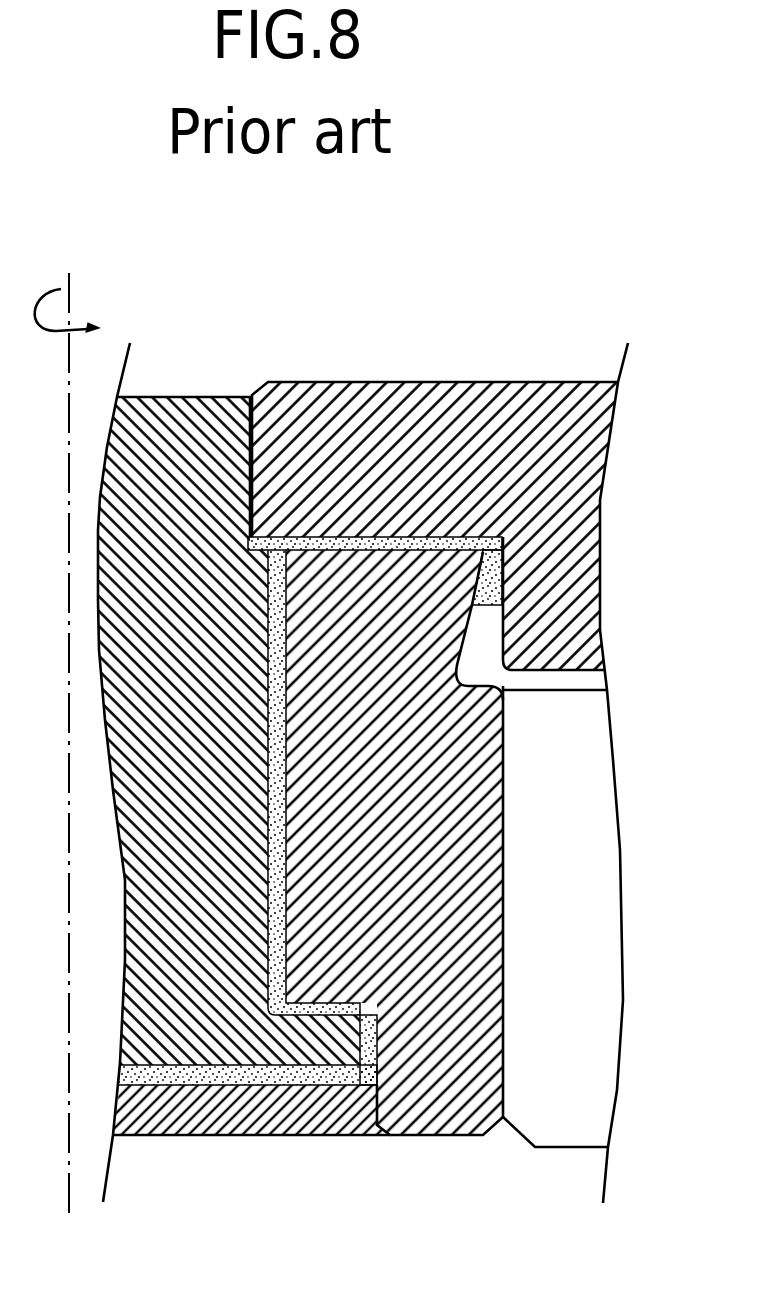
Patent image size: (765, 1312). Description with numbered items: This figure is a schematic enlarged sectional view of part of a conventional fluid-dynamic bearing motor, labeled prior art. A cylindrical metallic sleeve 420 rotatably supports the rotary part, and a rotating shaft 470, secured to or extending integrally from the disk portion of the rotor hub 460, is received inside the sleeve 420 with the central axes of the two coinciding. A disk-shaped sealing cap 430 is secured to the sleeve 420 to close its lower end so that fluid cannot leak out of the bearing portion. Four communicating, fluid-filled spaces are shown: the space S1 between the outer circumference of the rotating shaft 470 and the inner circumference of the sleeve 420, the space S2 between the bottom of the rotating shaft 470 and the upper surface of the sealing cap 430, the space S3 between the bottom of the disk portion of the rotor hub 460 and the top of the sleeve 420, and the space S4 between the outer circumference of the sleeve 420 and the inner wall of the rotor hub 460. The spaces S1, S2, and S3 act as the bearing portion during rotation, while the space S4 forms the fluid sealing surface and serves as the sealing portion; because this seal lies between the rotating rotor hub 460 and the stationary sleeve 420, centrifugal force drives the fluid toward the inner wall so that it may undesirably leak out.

The rotor hub 460 is at (410, 376).
The rotating shaft 470 is at (219, 711).
The sleeve 420 is at (441, 887).
The sealing cap 430 is at (258, 1150).
The space S1 is at (276, 797).
The space S2 is at (205, 1080).
The space S3 is at (358, 549).
The space S4 is at (503, 583).